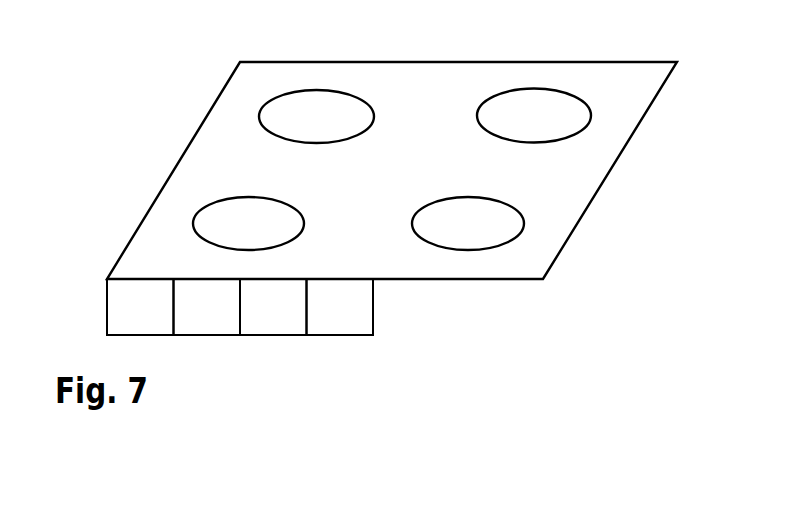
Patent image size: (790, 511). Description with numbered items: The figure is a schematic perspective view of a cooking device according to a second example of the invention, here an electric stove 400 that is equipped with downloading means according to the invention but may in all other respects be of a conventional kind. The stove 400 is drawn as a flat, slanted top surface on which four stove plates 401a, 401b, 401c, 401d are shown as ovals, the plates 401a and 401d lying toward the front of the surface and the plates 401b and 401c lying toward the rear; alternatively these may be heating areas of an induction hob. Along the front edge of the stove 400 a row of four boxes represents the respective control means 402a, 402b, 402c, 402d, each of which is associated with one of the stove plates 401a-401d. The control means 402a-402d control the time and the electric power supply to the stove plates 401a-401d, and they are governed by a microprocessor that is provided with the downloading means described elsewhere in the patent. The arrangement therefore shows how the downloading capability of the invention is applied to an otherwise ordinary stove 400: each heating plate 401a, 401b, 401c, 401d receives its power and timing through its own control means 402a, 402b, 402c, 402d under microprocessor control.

The electric stove 400 is at (490, 306).
The stove plate 401a is at (277, 234).
The stove plate 401b is at (345, 127).
The stove plate 401c is at (562, 126).
The stove plate 401d is at (497, 234).
The control means 402a is at (167, 322).
The control means 402b is at (234, 322).
The control means 402c is at (299, 322).
The control means 402d is at (367, 322).